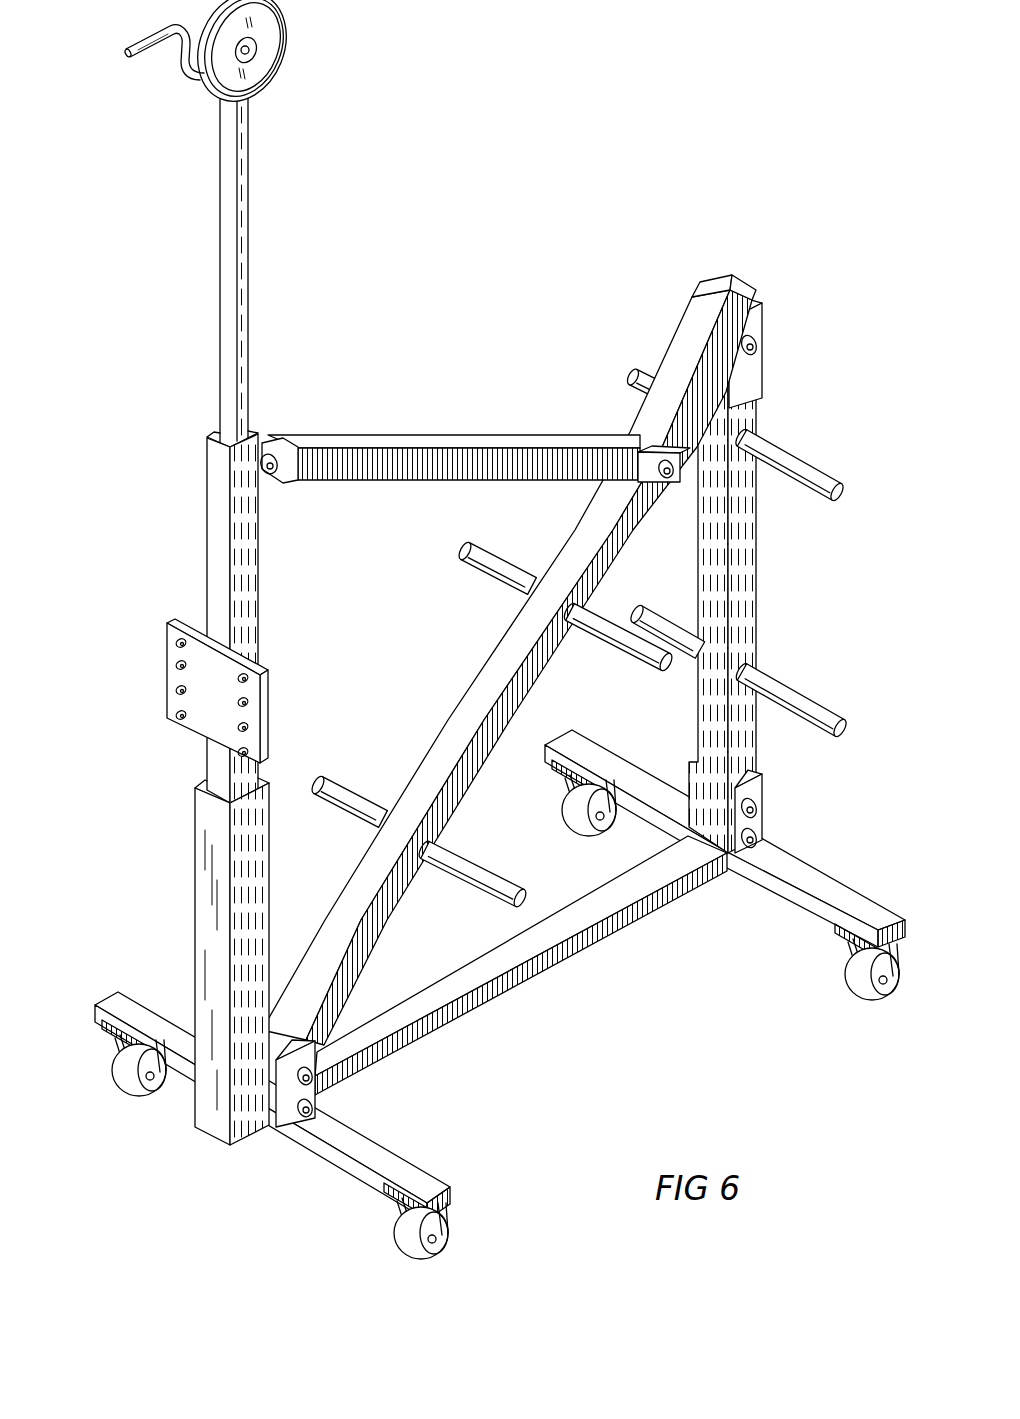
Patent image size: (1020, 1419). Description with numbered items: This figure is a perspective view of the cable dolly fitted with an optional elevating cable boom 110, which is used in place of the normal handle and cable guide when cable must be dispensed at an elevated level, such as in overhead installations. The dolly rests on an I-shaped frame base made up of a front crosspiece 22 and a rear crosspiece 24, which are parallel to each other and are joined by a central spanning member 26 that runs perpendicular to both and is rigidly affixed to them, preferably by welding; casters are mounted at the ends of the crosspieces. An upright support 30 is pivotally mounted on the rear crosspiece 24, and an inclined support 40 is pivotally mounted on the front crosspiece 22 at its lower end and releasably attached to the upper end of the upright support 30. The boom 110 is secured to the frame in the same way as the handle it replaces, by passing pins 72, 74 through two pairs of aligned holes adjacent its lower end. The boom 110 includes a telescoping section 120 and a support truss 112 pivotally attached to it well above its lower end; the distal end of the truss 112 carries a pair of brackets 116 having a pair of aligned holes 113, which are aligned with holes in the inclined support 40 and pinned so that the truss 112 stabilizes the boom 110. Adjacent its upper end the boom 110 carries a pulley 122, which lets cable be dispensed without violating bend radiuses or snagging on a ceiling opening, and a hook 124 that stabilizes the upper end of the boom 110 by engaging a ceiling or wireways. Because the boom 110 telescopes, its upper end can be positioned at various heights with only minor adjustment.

The front crosspiece 22 is at (405, 1173).
The rear crosspiece 24 is at (805, 882).
The central spanning member 26 is at (530, 983).
The upright support 30 is at (753, 610).
The inclined support 40 is at (485, 660).
The pin 72 is at (313, 1071).
The pin 74 is at (282, 1128).
The boom 110 is at (258, 545).
The support truss 112 is at (421, 436).
The aligned holes 113 is at (668, 477).
The brackets 116 is at (645, 450).
The telescoping section 120 is at (252, 322).
The pulley 122 is at (283, 34).
The hook 124 is at (142, 33).